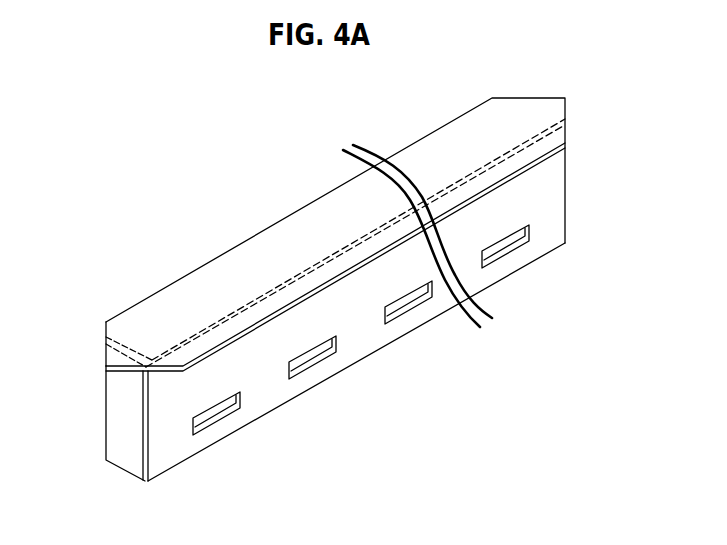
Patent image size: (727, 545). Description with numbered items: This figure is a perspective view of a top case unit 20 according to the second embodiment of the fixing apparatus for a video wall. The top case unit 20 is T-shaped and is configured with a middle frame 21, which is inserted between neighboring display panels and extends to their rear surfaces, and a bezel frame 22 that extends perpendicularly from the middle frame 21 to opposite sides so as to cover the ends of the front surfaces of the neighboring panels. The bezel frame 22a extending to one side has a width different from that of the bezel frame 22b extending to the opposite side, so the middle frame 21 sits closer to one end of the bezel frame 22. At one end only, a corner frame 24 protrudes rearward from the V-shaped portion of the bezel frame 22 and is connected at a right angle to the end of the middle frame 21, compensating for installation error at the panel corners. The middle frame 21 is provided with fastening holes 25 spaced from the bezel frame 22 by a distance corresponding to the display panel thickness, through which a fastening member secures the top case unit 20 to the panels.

The top case unit 20 is at (137, 134).
The middle frame 21 is at (275, 392).
The bezel frame 22 is at (283, 193).
The bezel frame 22a is at (300, 292).
The bezel frame 22b is at (130, 317).
The corner frame 24 is at (113, 428).
The fastening holes 25 is at (213, 413).